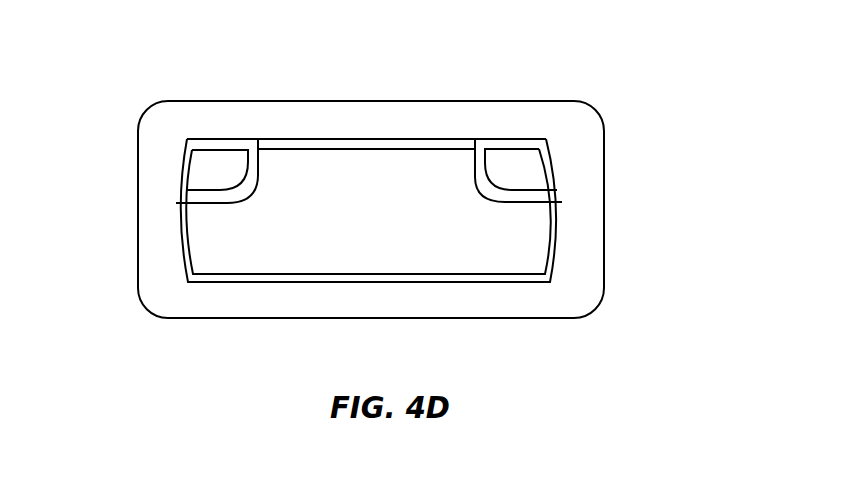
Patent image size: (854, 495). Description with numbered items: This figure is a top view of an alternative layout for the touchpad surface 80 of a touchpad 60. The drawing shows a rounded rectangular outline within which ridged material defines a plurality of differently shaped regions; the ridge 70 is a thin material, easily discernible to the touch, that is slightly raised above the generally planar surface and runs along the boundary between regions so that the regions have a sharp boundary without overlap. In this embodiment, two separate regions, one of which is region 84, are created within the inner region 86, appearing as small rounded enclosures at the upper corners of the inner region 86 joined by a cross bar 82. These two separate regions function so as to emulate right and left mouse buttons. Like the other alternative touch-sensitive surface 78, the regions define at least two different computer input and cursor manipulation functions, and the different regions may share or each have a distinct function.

The touchpad 60 is at (414, 172).
The ridge 70 is at (182, 253).
The touch-sensitive surface 78 is at (533, 171).
The touchpad surface 80 is at (485, 123).
The cross bar 82 is at (293, 125).
The separate region 84 is at (200, 166).
The inner region 86 is at (350, 212).